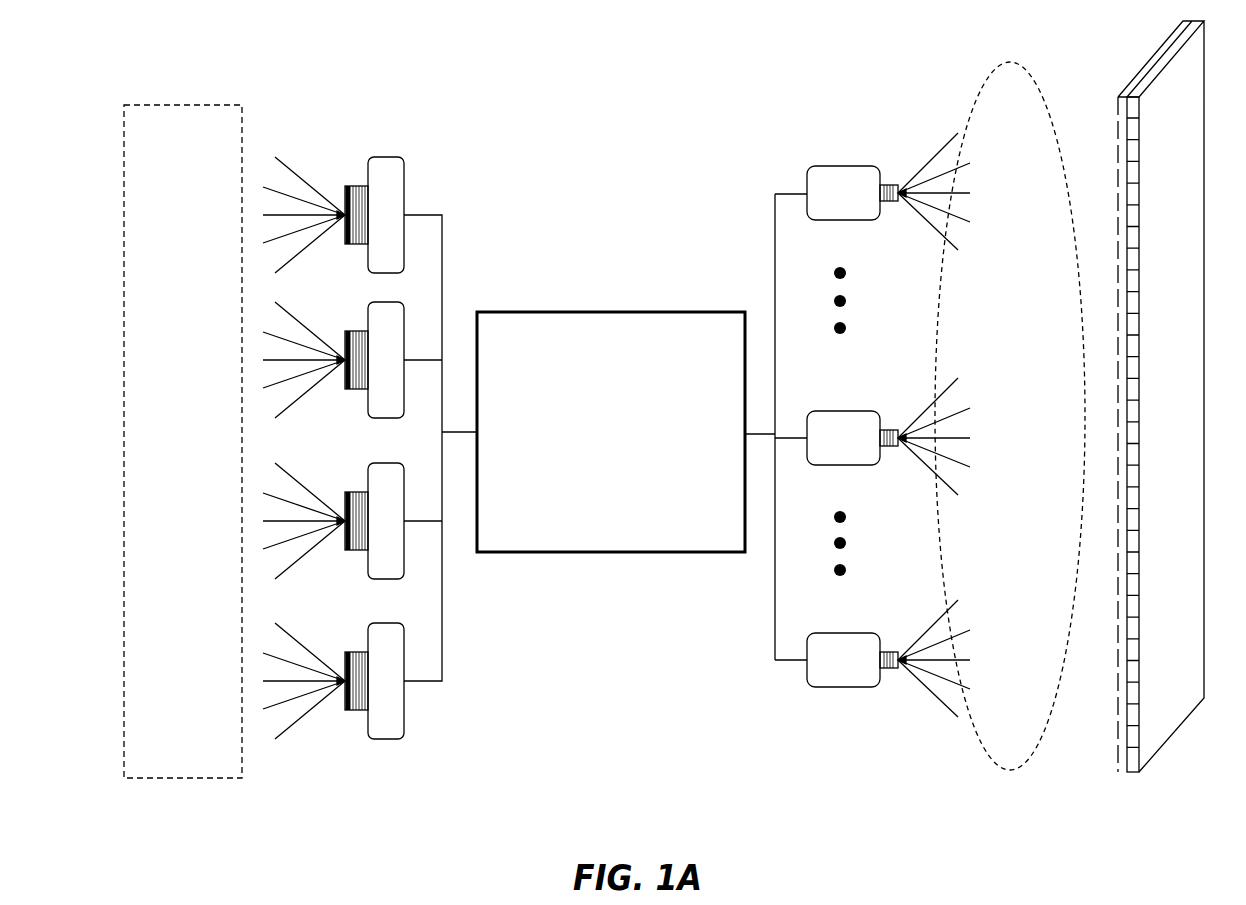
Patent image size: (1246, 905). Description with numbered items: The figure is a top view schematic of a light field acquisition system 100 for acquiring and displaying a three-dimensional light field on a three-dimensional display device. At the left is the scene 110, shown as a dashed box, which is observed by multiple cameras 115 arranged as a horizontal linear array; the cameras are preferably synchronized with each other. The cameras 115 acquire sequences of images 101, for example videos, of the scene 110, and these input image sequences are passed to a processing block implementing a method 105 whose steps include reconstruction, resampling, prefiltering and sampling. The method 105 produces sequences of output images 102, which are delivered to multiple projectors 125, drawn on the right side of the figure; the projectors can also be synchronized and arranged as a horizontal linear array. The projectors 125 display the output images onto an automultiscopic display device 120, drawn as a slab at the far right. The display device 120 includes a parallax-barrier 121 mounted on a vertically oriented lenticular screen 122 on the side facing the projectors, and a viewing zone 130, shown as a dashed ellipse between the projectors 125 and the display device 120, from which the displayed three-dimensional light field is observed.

The light field acquisition system 100 is at (664, 434).
The sequences of images 101 is at (435, 215).
The sequences of output images 102 is at (776, 231).
The method 105 is at (551, 312).
The scene 110 is at (198, 105).
The cameras 115 is at (403, 157).
The automultiscopic display device 120 is at (1122, 432).
The parallax-barrier 121 is at (1118, 757).
The lenticular screen 122 is at (1139, 772).
The projectors 125 is at (836, 166).
The viewing zone 130 is at (972, 727).